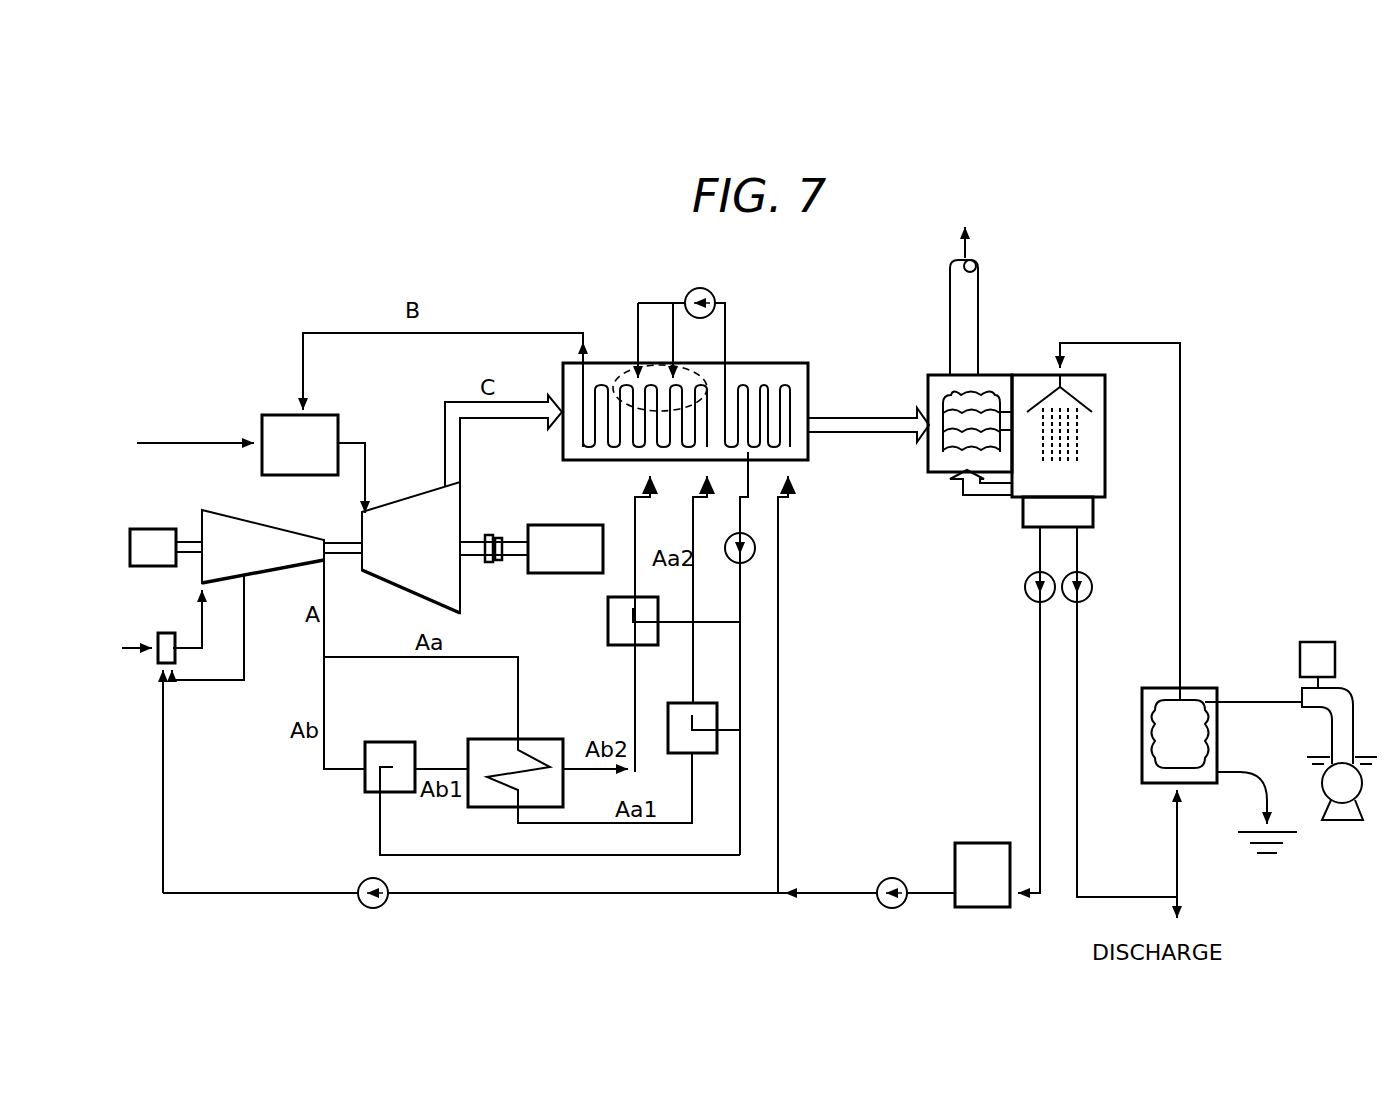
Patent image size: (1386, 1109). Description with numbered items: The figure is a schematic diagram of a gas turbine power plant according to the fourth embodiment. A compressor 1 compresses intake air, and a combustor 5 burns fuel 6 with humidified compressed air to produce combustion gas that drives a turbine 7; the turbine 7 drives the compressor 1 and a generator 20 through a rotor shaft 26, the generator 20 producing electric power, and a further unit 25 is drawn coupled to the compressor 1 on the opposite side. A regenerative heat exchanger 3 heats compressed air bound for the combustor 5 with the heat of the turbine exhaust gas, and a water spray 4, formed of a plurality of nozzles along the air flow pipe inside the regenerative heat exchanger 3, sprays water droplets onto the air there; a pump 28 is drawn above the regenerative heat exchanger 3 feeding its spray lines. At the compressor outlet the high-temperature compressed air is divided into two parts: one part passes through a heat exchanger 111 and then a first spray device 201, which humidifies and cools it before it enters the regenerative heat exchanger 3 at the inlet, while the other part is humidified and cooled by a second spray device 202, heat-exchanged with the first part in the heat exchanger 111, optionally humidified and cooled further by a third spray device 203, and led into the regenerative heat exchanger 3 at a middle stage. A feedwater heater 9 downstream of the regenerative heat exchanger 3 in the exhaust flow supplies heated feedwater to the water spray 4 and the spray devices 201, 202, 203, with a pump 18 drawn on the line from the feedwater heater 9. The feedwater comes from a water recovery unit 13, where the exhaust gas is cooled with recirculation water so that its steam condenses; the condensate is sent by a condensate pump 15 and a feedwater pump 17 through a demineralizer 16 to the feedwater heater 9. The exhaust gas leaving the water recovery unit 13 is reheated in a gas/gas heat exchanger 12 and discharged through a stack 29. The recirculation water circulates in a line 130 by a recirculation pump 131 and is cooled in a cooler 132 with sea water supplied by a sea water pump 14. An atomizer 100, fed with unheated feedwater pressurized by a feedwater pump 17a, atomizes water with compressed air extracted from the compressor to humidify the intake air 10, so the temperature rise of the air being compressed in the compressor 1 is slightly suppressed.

The compressor 1 is at (230, 514).
The regenerative heat exchanger 3 is at (612, 462).
The water spray 4 is at (622, 380).
The combustor 5 is at (277, 415).
The fuel 6 is at (188, 443).
The turbine 7 is at (462, 596).
The feedwater heater 9 is at (758, 388).
The air 10 is at (132, 648).
The gas/gas heat exchanger 12 is at (953, 438).
The water recovery unit 13 is at (1093, 398).
The sea water pump 14 is at (1330, 720).
The condensate pump 15 is at (1025, 584).
The demineralizer 16 is at (975, 850).
The feedwater pump 17 is at (897, 878).
The feedwater pump 17a is at (384, 880).
The circulation pump 18 is at (744, 534).
The generator 20 is at (540, 525).
The starter motor 25 is at (144, 529).
The rotor shaft 26 is at (478, 556).
The circulation pump 28 is at (712, 290).
The stack 29 is at (957, 305).
The atomizer 100 is at (156, 668).
The heat exchanger 111 is at (543, 739).
The line 130 is at (1182, 506).
The recirculation pump 131 is at (1092, 580).
The cooler 132 is at (1211, 688).
The first spray device 201 is at (703, 755).
The second spray device 202 is at (390, 742).
The third spray device 203 is at (607, 632).